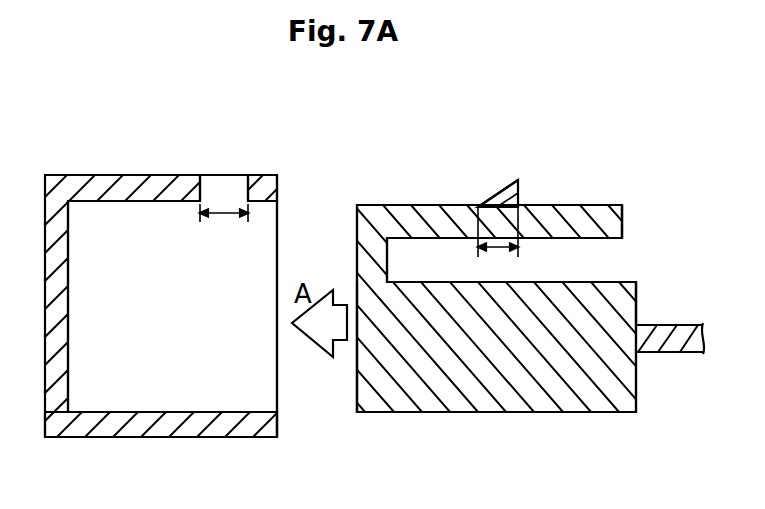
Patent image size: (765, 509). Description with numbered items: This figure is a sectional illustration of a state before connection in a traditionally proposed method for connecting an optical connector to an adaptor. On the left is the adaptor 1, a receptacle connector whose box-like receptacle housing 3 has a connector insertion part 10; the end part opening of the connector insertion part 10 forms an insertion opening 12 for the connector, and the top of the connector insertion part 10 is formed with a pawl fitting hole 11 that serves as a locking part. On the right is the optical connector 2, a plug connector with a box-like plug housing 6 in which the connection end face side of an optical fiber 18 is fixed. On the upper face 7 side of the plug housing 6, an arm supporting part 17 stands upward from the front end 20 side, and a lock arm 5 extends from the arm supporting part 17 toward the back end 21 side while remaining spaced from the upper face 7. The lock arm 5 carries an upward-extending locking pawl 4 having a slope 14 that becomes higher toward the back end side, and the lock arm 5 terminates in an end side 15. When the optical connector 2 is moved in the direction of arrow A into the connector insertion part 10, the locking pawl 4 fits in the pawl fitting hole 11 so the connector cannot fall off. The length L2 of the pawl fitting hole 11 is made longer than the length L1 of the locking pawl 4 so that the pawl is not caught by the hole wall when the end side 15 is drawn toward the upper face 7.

The adaptor 1 is at (143, 458).
The optical connector 2 is at (468, 420).
The receptacle housing 3 is at (192, 425).
The locking pawl 4 is at (508, 192).
The lock arm 5 is at (546, 215).
The plug housing 6 is at (590, 388).
The upper face 7 is at (598, 282).
The connector insertion part 10 is at (132, 237).
The pawl fitting hole 11 is at (225, 185).
The insertion opening 12 is at (282, 245).
The slope 14 is at (487, 203).
The end side 15 is at (598, 218).
The arm supporting part 17 is at (388, 262).
The optical fiber 18 is at (664, 328).
The front end 20 is at (353, 292).
The back end 21 is at (640, 289).